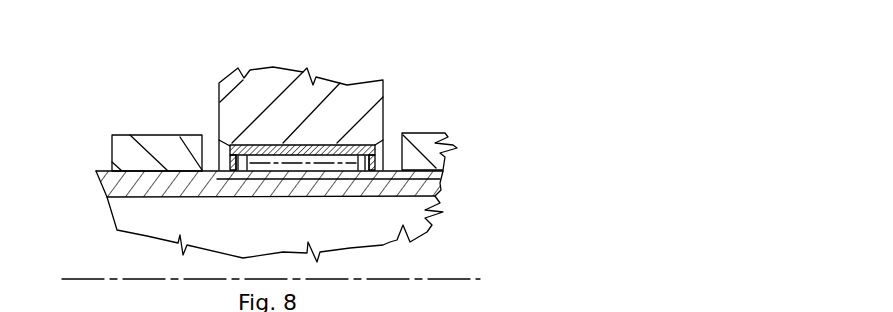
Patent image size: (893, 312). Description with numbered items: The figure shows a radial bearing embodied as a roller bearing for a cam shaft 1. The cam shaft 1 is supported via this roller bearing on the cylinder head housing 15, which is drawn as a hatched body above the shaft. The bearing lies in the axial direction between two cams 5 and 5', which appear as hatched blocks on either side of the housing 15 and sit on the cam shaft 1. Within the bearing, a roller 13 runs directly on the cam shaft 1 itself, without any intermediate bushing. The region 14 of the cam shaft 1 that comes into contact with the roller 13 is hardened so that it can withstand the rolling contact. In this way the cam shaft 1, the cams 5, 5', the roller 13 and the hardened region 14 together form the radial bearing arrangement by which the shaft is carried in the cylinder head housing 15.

The cam shaft 1 is at (467, 265).
The cam 5 is at (443, 139).
The cam 5' is at (159, 114).
The roller 13 is at (335, 152).
The region 14 is at (330, 173).
The cylinder head housing 15 is at (355, 67).